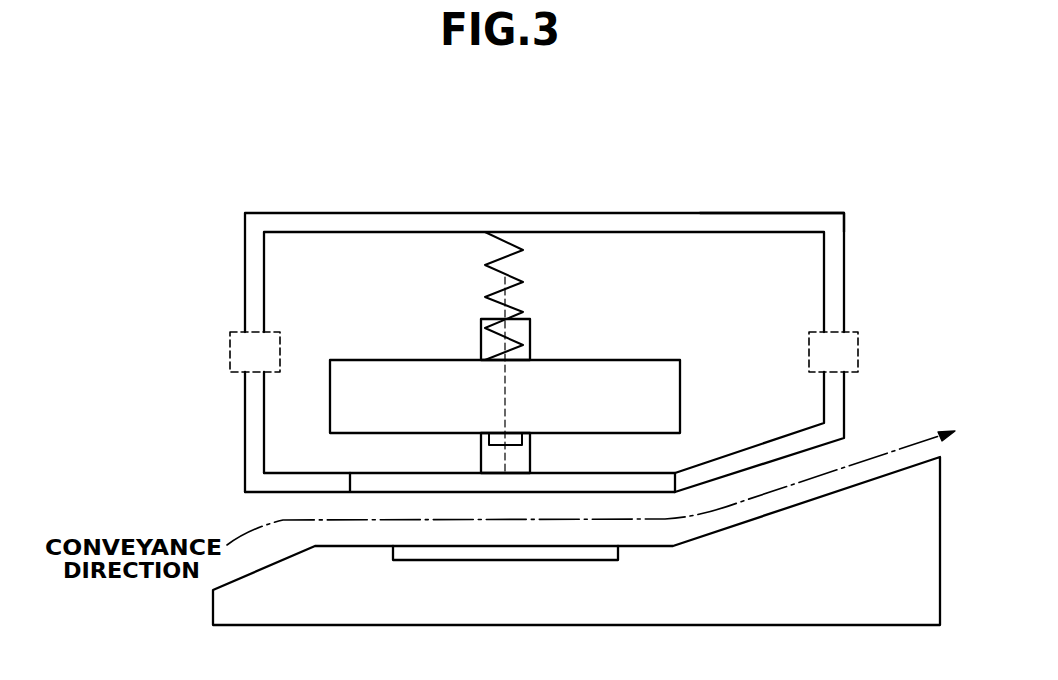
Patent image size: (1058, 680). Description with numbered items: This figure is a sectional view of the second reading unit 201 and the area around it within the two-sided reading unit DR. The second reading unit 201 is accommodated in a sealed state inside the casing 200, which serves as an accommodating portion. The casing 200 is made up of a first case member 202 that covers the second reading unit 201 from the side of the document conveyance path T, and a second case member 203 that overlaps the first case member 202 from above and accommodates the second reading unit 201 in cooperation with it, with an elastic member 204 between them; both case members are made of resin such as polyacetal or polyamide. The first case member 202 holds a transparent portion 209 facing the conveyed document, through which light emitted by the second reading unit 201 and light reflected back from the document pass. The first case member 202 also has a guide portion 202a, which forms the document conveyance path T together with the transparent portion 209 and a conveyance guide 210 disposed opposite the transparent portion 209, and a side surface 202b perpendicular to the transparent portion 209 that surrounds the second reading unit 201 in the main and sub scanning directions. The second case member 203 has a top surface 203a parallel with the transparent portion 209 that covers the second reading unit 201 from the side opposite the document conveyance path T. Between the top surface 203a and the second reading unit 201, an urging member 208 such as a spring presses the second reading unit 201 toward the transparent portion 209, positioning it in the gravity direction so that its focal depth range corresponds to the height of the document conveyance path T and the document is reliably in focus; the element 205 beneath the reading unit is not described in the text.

The casing 200 is at (589, 207).
The second reading unit 201 is at (628, 360).
The first case member 202 is at (245, 403).
The guide portion 202a is at (285, 483).
The side surface 202b is at (835, 397).
The second case member 203 is at (375, 212).
The top surface 203a is at (722, 223).
The elastic member 204 is at (230, 347).
The head holder 205 is at (532, 453).
The urging member 208 is at (523, 280).
The transparent portion 209 is at (377, 473).
The conveyance guide 210 is at (340, 546).
The document conveyance path T is at (275, 533).
The two-sided reading unit DR is at (282, 185).